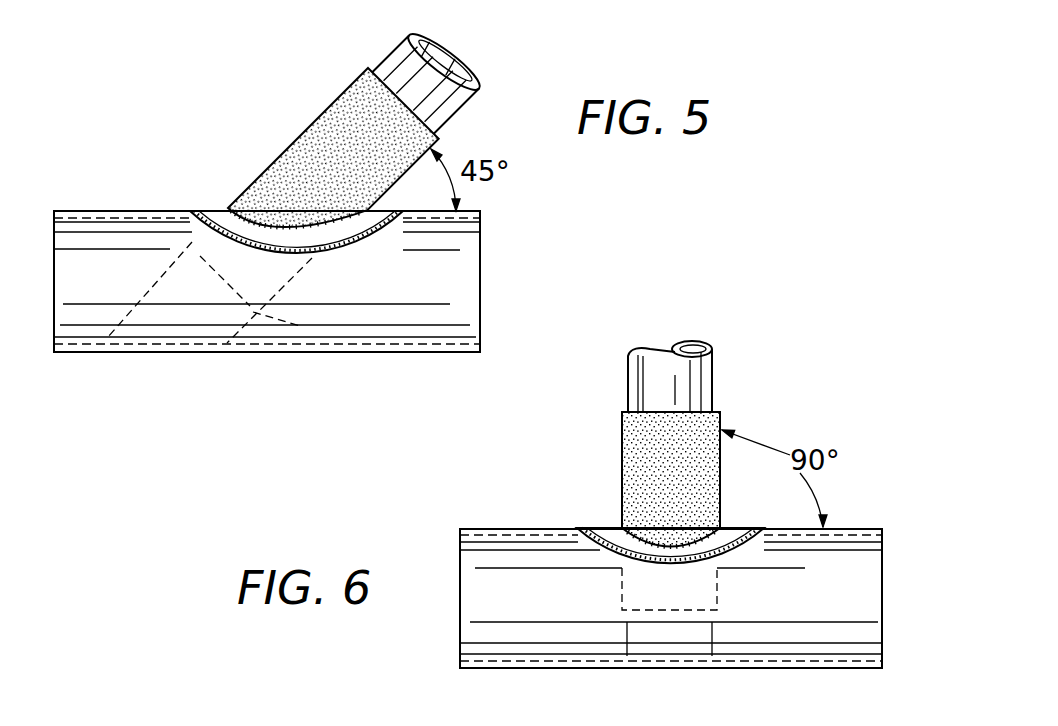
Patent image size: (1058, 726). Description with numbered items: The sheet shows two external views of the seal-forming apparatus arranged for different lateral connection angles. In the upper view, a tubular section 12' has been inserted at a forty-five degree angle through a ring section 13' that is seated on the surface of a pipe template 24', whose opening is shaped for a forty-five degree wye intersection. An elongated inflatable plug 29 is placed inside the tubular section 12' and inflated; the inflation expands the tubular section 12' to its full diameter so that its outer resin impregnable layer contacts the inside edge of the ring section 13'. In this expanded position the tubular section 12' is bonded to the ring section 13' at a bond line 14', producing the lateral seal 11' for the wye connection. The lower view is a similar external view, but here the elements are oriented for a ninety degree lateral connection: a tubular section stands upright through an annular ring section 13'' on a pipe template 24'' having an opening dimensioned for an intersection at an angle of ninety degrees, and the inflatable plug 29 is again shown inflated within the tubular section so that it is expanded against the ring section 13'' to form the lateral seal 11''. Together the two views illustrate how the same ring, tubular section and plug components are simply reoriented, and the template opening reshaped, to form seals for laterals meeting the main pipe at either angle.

In FIG. 5, the lateral seal 11' is at (327, 174).
In FIG. 5, the tubular section 12' is at (462, 76).
In FIG. 5, the ring section 13' is at (374, 231).
In FIG. 5, the bond line 14' is at (286, 198).
In FIG. 5, the pipe template 24' is at (267, 249).
In FIG. 5, the elongated inflatable plug 29 is at (410, 88).
In FIG. 6, the elongated inflatable plug 29 is at (684, 392).
In FIG. 6, the lateral seal 11'' is at (629, 480).
In FIG. 6, the annular ring section 13'' is at (707, 472).
In FIG. 6, the pipe template 24'' is at (667, 575).